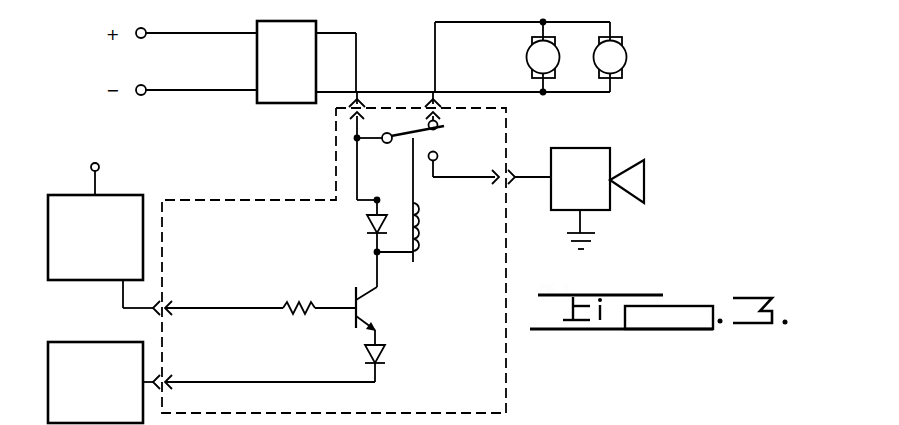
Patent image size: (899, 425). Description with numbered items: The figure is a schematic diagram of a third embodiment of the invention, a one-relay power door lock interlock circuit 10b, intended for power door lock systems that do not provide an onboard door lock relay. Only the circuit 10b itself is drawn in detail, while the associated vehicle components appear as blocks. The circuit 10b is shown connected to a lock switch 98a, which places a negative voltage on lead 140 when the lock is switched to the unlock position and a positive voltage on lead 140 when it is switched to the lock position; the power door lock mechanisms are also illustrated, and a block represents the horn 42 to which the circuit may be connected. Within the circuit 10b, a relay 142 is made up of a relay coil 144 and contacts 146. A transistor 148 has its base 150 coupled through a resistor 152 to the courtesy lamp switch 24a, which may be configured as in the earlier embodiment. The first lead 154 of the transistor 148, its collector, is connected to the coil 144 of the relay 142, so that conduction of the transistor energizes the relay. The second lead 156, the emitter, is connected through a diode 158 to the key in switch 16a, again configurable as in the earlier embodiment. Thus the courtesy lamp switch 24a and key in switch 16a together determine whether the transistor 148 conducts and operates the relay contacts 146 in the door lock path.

The lead 140 is at (347, 30).
The lock switch 98a is at (273, 100).
The contacts 146 is at (435, 142).
The horn 42 is at (593, 158).
The courtesy lamp switch 24a is at (143, 195).
The key in switch 16a is at (78, 342).
The circuit 10b is at (278, 240).
The relay 142 is at (430, 192).
The relay coil 144 is at (420, 232).
The transistor 148 is at (353, 288).
The base 150 is at (331, 312).
The resistor 152 is at (287, 300).
The first lead 154 is at (372, 292).
The second lead 156 is at (378, 330).
The diode 158 is at (388, 352).